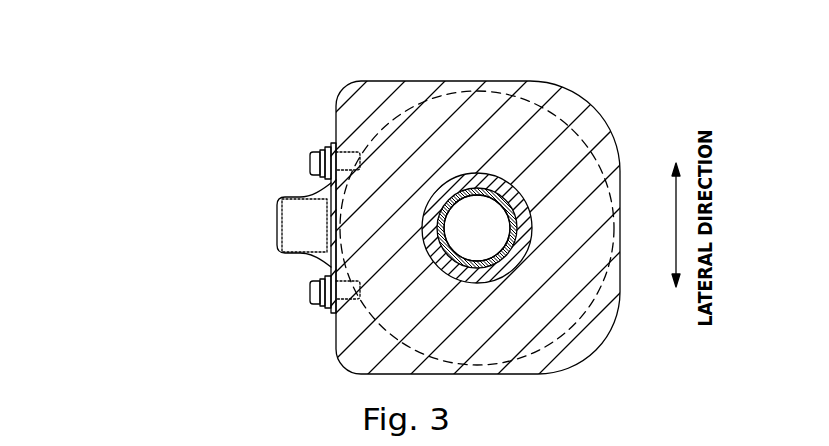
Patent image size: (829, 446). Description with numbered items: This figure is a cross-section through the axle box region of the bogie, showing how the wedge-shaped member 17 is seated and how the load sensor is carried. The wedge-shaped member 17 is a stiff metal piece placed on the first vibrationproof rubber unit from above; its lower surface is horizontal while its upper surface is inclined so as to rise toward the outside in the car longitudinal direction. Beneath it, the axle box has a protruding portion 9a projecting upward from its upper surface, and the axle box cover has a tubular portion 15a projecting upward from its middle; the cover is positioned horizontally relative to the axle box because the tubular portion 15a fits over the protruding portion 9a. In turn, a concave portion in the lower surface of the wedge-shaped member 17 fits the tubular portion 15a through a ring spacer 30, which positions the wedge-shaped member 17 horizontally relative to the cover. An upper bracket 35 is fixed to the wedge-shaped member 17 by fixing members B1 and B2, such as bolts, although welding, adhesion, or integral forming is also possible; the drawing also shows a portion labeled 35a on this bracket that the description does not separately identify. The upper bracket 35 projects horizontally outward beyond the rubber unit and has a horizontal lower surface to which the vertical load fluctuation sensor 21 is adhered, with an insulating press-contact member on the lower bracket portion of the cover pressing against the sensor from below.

The wedge-shaped member 17 is at (453, 80).
The protruding portion 9a is at (486, 213).
The tubular portion 15a is at (505, 250).
The ring spacer 30 is at (508, 240).
The upper bracket 35 is at (333, 146).
The fixing member B1 is at (310, 162).
The fixing member B2 is at (310, 294).
The vertical load fluctuation sensor 21 is at (290, 220).
The bracket flange portion 35a is at (276, 238).